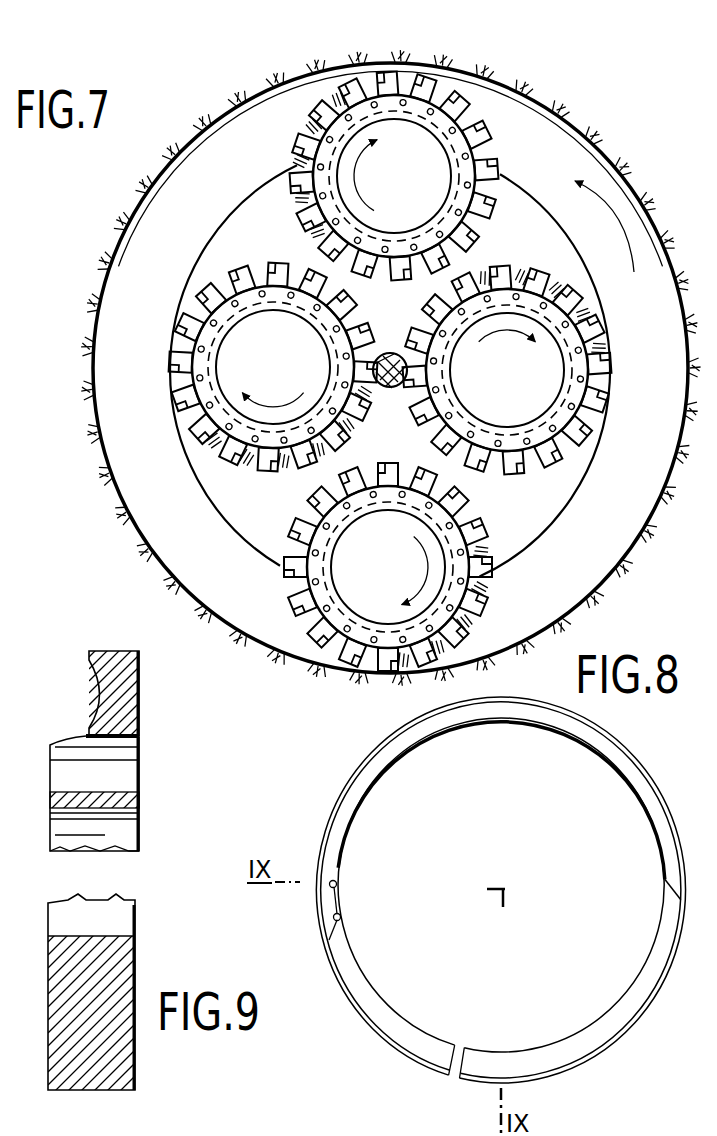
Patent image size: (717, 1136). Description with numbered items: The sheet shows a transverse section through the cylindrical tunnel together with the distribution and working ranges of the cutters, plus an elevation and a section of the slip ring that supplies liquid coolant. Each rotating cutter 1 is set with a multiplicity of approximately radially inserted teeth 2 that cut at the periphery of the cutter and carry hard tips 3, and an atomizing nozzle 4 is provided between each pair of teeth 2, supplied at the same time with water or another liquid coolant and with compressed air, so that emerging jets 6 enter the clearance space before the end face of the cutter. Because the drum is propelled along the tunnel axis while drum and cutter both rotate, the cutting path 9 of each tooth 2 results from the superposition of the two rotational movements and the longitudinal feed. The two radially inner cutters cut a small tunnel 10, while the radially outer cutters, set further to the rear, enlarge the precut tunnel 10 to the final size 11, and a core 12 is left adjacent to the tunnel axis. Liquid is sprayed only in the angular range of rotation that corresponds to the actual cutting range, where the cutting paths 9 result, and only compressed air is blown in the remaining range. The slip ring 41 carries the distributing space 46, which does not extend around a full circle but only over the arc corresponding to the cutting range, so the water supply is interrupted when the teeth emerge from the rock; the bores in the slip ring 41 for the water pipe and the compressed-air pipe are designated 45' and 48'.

In FIG. 7, the rotating cutter 1 is at (382, 185).
In FIG. 7, the tooth 2 is at (487, 188).
In FIG. 7, the hard tip 3 is at (480, 115).
In FIG. 7, the atomizing nozzle 4 is at (468, 97).
In FIG. 7, the emerging jet 6 is at (322, 108).
In FIG. 7, the cutting path 9 is at (358, 88).
In FIG. 7, the small tunnel 10 is at (207, 498).
In FIG. 7, the final size 11 is at (118, 222).
In FIG. 7, the core 12 is at (392, 350).
In FIG. 8, the slip ring 41 is at (406, 1034).
In FIG. 9, the slip ring 41 is at (92, 977).
In FIG. 8, the bore for water pipe 45' is at (301, 850).
In FIG. 9, the bore for water pipe 45' is at (136, 801).
In FIG. 7, the distributing space 46 is at (300, 120).
In FIG. 8, the distributing space 46 is at (627, 764).
In FIG. 9, the distributing space 46 is at (95, 697).
In FIG. 8, the bore for compressed-air pipe 48' is at (294, 924).